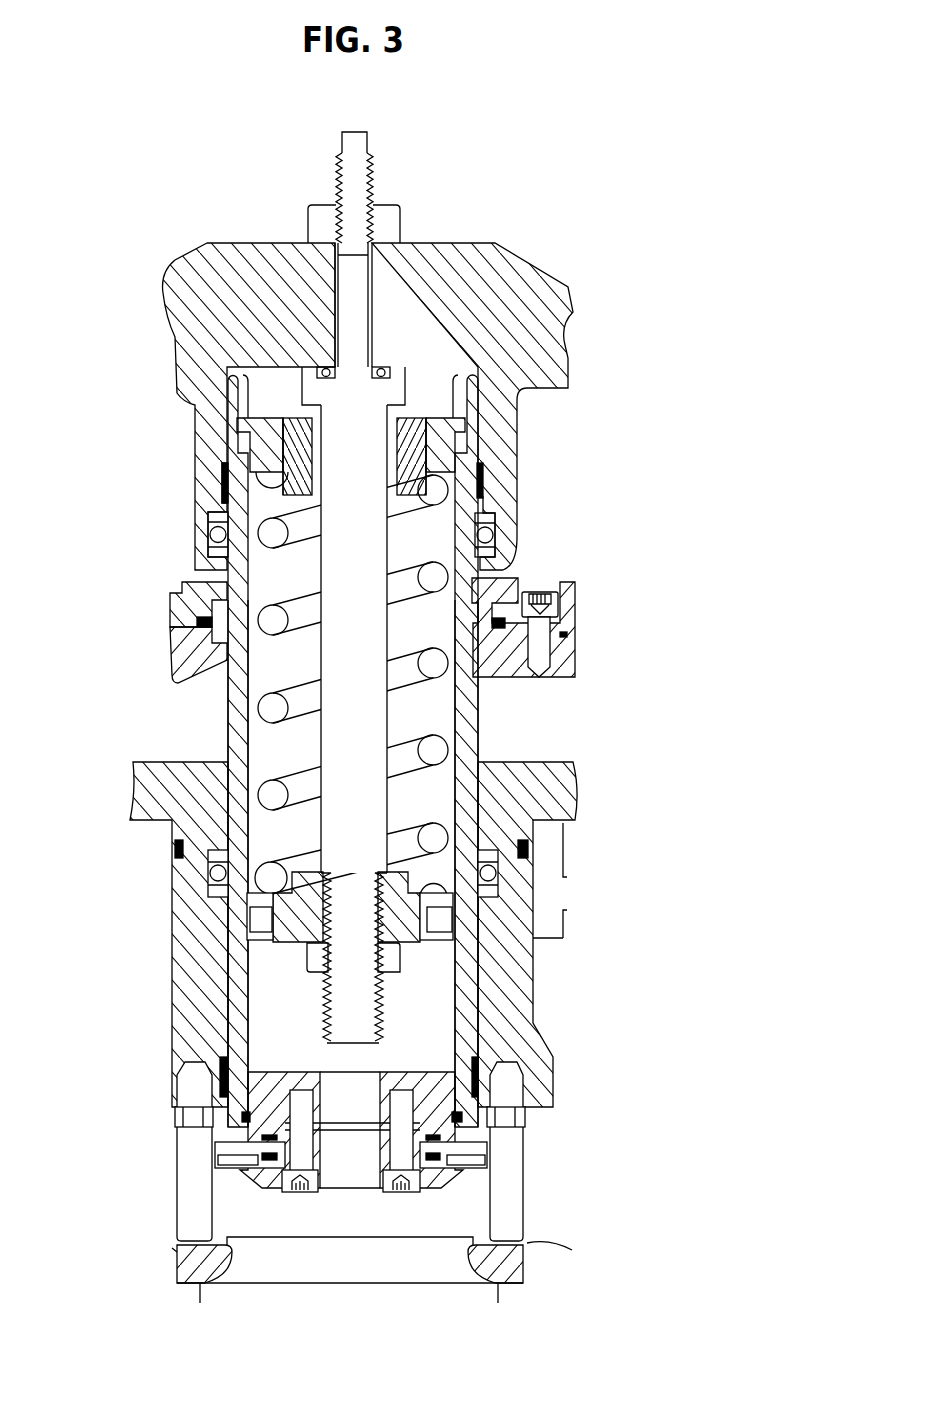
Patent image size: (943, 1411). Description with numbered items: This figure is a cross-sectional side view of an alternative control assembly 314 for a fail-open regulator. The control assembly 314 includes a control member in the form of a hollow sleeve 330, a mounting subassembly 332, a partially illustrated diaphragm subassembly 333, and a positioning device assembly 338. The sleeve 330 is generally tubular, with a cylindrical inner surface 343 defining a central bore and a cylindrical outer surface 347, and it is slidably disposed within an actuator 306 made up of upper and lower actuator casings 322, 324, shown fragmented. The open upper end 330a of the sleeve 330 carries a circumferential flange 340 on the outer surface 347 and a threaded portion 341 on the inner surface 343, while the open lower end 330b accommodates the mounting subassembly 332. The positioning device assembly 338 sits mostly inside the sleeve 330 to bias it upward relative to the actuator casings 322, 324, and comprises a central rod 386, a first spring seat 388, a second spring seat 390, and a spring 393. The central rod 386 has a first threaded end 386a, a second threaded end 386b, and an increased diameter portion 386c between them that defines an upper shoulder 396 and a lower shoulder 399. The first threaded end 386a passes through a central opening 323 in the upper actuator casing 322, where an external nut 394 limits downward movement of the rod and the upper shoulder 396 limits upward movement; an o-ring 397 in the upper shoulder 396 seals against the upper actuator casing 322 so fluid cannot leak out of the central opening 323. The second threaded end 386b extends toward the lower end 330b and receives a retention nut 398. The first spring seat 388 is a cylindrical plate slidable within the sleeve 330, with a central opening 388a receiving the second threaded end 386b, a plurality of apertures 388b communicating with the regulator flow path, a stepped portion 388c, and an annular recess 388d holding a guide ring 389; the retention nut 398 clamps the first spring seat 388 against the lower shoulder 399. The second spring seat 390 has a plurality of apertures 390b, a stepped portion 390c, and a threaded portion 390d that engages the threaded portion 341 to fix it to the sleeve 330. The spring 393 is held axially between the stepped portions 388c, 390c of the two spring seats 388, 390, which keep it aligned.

The actuator 306 is at (498, 268).
The control assembly 314 is at (538, 576).
The upper actuator casing 322 is at (235, 287).
The central opening 323 is at (340, 315).
The lower actuator casing 324 is at (560, 780).
The hollow sleeve 330 is at (472, 680).
The upper end of sleeve 330a is at (477, 405).
The lower end of sleeve 330b is at (468, 1122).
The mounting subassembly 332 is at (352, 1180).
The diaphragm subassembly 333 is at (558, 646).
The positioning device assembly 338 is at (433, 532).
The circumferential flange 340 is at (183, 652).
The threaded portion of sleeve 341 is at (457, 397).
The inner surface 343 is at (246, 1040).
The outer surface 347 is at (475, 1047).
The central rod 386 is at (347, 567).
The first threaded end 386a is at (365, 172).
The second threaded end 386b is at (360, 1003).
The increased diameter portion 386c is at (327, 652).
The first spring seat 388 is at (320, 945).
The central opening of first spring seat 388a is at (373, 903).
The plurality of apertures 388b is at (440, 907).
The stepped portion 388c is at (493, 852).
The annular recess 388d is at (260, 922).
The guide ring 389 is at (307, 937).
The second spring seat 390 is at (445, 443).
The plurality of apertures 390b is at (413, 447).
The stepped portion 390c is at (212, 535).
The threaded portion 390d is at (270, 462).
The spring 393 is at (478, 560).
The external nut 394 is at (388, 215).
The upper shoulder 396 is at (305, 400).
The o-ring 397 is at (313, 388).
The retention nut 398 is at (400, 962).
The lower shoulder 399 is at (325, 858).